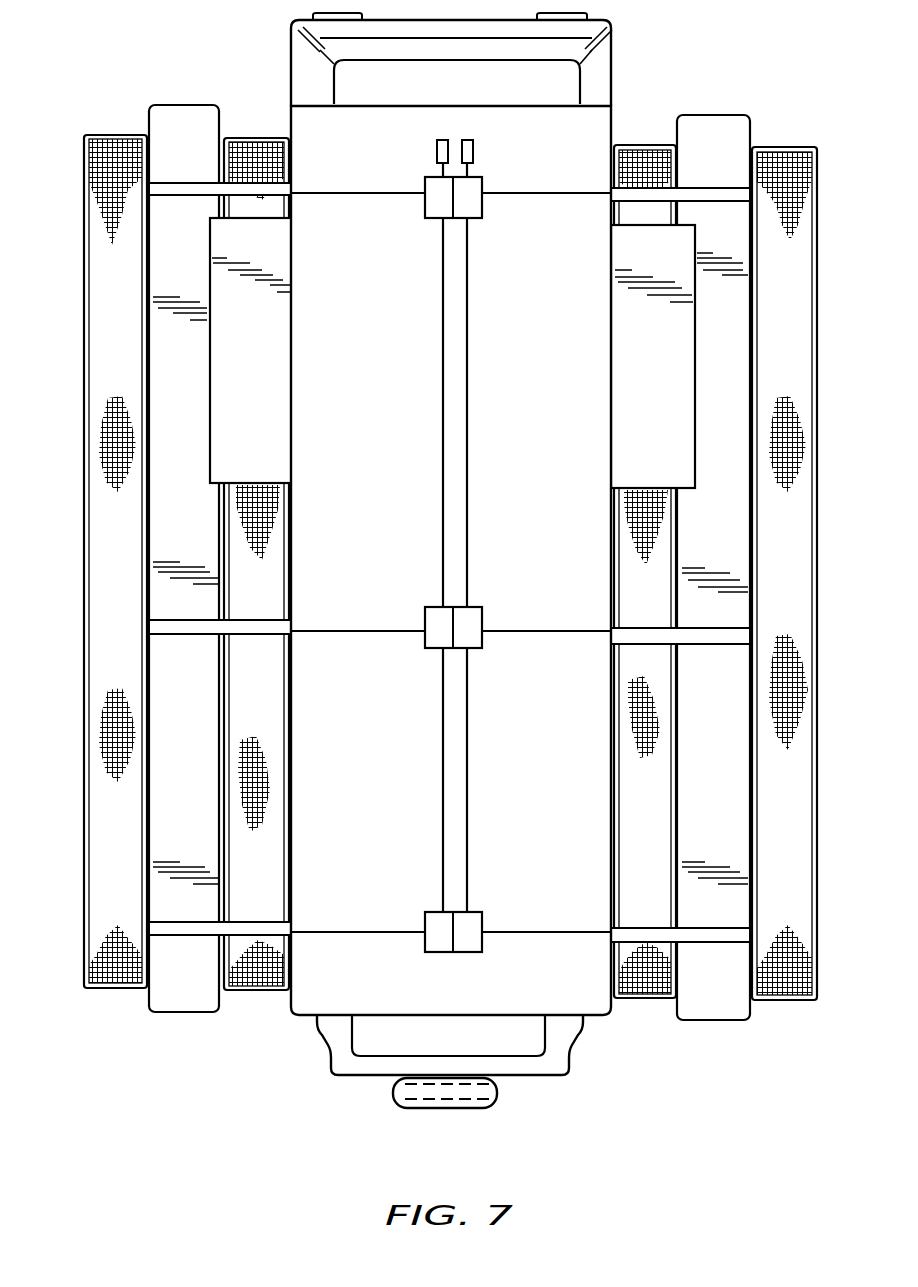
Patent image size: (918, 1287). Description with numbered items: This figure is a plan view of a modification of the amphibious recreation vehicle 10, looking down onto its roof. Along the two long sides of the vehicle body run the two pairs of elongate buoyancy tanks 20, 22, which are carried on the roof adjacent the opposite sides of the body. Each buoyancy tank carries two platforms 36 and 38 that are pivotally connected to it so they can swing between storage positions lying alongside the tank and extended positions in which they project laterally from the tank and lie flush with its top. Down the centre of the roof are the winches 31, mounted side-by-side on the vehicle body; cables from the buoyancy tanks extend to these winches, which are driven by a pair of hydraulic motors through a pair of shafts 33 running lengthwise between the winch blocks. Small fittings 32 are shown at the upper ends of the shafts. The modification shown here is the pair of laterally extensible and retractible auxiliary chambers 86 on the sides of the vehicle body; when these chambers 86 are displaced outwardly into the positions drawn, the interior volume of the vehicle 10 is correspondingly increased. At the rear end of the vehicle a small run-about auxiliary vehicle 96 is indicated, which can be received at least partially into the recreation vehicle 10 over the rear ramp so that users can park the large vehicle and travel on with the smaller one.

The amphibious recreation vehicle 10 is at (262, 1034).
The elongate buoyancy tank 20 is at (785, 363).
The elongate buoyancy tank 22 is at (170, 354).
The winch 31 is at (430, 208).
The pins 32 is at (437, 152).
The shaft 33 is at (441, 368).
The platform 36 is at (238, 602).
The platform 38 is at (108, 852).
The auxiliary chamber 86 is at (260, 350).
The auxiliary vehicle 96 is at (317, 1080).